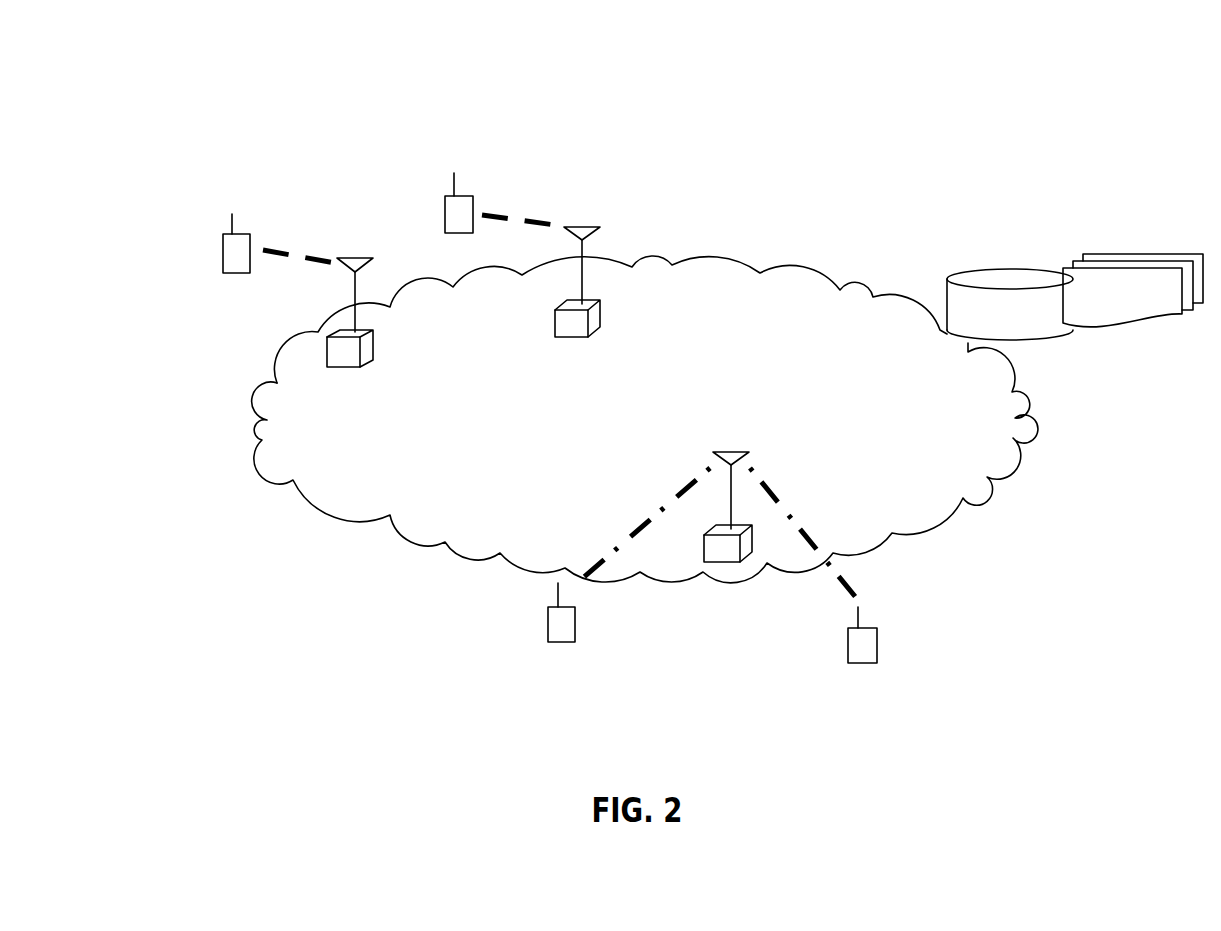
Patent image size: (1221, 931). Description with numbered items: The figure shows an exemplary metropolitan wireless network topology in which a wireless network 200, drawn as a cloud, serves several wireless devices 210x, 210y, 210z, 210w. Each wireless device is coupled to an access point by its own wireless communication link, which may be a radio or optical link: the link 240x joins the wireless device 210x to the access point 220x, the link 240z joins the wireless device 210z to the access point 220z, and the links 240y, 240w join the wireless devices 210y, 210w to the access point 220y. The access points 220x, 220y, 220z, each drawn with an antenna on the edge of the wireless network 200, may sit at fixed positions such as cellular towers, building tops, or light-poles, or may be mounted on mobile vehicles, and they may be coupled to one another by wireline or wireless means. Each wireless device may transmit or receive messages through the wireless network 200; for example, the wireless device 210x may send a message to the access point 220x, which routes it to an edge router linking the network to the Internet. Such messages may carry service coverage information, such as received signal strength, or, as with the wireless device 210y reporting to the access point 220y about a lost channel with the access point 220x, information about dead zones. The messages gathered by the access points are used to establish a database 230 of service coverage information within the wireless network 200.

The wireless network 200 is at (727, 412).
The wireless device 210x is at (232, 250).
The wireless device 210y is at (558, 642).
The wireless device 210z is at (450, 207).
The wireless device 210w is at (858, 663).
The access point 220x is at (330, 348).
The access point 220y is at (725, 555).
The access point 220z is at (600, 302).
The database 230 is at (958, 297).
The wireless communication link 240x is at (302, 250).
The wireless communication link 240y is at (585, 582).
The wireless communication link 240z is at (533, 213).
The wireless communication link 240w is at (808, 580).